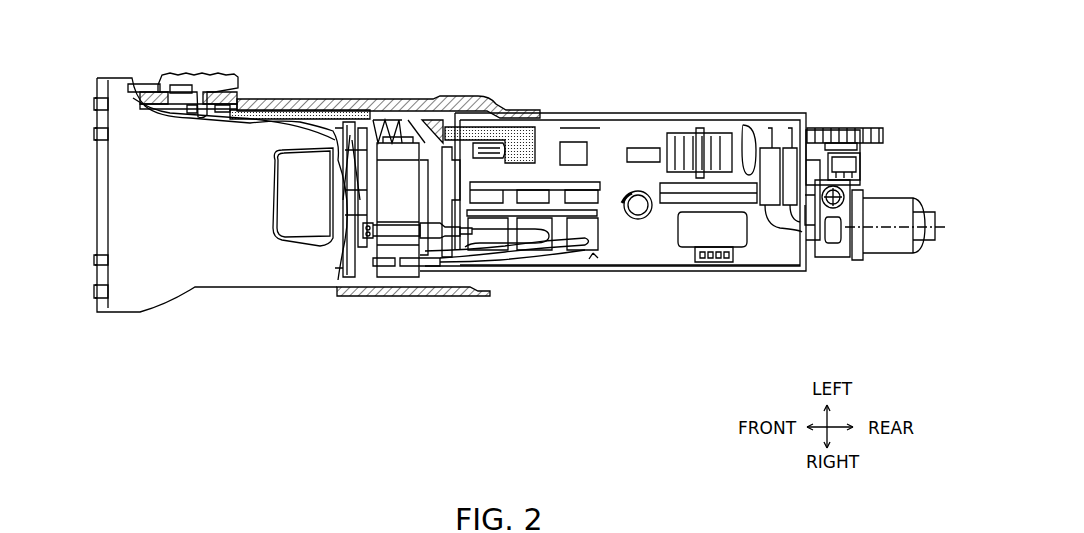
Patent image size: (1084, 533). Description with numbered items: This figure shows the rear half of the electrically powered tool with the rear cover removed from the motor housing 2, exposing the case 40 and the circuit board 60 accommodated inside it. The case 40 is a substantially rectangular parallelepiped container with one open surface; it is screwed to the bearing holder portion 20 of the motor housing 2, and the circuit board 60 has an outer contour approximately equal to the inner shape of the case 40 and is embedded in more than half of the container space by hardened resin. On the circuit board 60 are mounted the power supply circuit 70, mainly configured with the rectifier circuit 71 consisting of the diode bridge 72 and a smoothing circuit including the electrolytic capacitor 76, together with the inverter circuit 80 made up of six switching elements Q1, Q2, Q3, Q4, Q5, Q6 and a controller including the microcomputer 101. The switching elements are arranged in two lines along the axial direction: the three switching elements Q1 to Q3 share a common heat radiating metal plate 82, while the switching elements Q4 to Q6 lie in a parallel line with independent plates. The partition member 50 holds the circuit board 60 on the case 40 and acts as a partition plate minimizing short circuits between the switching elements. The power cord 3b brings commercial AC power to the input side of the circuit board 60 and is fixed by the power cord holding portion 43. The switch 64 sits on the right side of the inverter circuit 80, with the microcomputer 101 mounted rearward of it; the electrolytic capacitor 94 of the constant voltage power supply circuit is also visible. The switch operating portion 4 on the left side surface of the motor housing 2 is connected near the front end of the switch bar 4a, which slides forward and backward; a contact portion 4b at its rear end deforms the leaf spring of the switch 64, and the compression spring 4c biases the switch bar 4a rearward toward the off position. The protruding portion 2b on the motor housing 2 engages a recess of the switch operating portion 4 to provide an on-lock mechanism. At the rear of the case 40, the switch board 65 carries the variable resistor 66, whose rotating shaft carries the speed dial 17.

The motor housing 2 is at (197, 222).
The protruding portion 2b is at (133, 84).
The power cord 3b is at (893, 243).
The switch operating portion 4 is at (207, 82).
The switch bar 4a is at (318, 116).
The contact portion 4b is at (527, 148).
The compression spring 4c is at (402, 127).
The speed dial 17 is at (872, 132).
The bearing holder portion 20 is at (400, 198).
The case 40 is at (645, 115).
The power cord holding portion 43 is at (835, 247).
The partition member 50 is at (597, 212).
The circuit board 60 is at (748, 264).
The switch 64 is at (493, 146).
The switch board 65 is at (818, 167).
The variable resistor 66 is at (860, 180).
The power supply circuit 70 is at (758, 214).
The rectifier circuit 71 is at (717, 128).
The diode bridge 72 is at (707, 187).
The electrolytic capacitor 76 is at (712, 232).
The inverter circuit 80 is at (593, 253).
The metal plate 82 is at (577, 141).
The electrolytic capacitor 94 is at (641, 207).
The microcomputer 101 is at (580, 130).
The switching element Q1 is at (483, 198).
The switching element Q2 is at (533, 198).
The switching element Q3 is at (600, 197).
The switching element Q4 is at (485, 224).
The switching element Q5 is at (538, 228).
The switching element Q6 is at (582, 228).